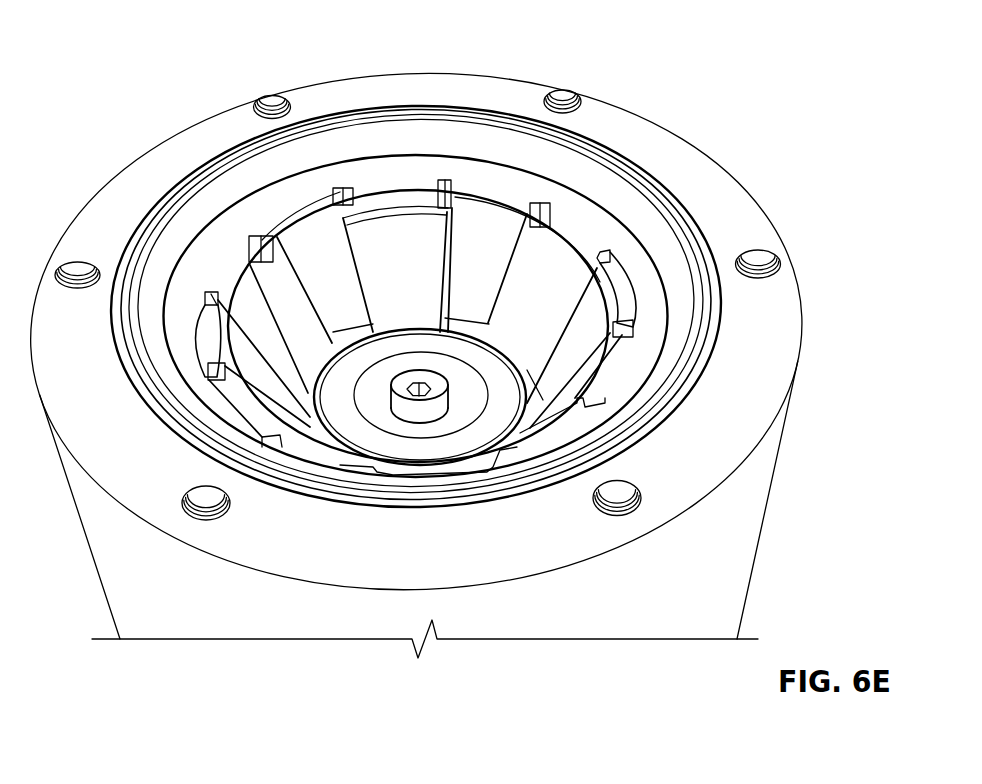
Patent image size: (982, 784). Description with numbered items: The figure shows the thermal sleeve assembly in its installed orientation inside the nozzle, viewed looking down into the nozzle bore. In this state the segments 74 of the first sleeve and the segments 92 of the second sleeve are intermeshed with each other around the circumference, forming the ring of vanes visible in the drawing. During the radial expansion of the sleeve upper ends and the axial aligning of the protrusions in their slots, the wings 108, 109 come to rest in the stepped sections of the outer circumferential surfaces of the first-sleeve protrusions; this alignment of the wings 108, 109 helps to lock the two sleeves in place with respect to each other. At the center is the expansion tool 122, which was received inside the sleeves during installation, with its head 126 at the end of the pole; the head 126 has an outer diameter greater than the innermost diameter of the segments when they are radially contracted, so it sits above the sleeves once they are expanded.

The segments 74 is at (245, 304).
The segments 92 is at (300, 241).
The wing 108 is at (443, 182).
The wing 109 is at (541, 202).
The expansion tool 122 is at (507, 351).
The head 126 is at (360, 356).